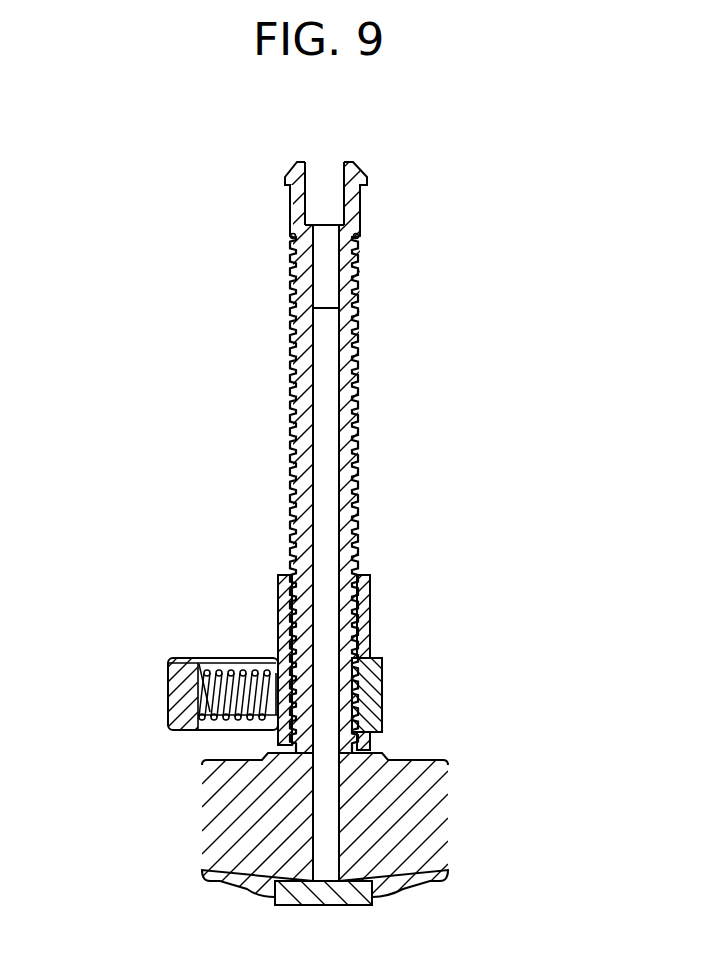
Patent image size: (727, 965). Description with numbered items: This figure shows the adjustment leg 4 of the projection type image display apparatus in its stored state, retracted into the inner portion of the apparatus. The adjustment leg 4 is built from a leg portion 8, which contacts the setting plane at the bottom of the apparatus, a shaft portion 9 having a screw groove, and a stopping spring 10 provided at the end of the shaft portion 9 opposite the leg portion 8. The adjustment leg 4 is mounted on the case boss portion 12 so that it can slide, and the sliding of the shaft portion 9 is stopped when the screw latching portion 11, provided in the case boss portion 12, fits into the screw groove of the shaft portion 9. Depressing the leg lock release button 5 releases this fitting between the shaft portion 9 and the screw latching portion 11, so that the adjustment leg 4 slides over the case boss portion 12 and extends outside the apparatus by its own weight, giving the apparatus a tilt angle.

The adjustment leg 4 is at (177, 238).
The leg lock release button 5 is at (178, 697).
The leg portion 8 is at (420, 810).
The shaft portion 9 is at (358, 480).
The stopping spring 10 is at (356, 236).
The screw latching portion 11 is at (382, 694).
The case boss portion 12 is at (370, 620).